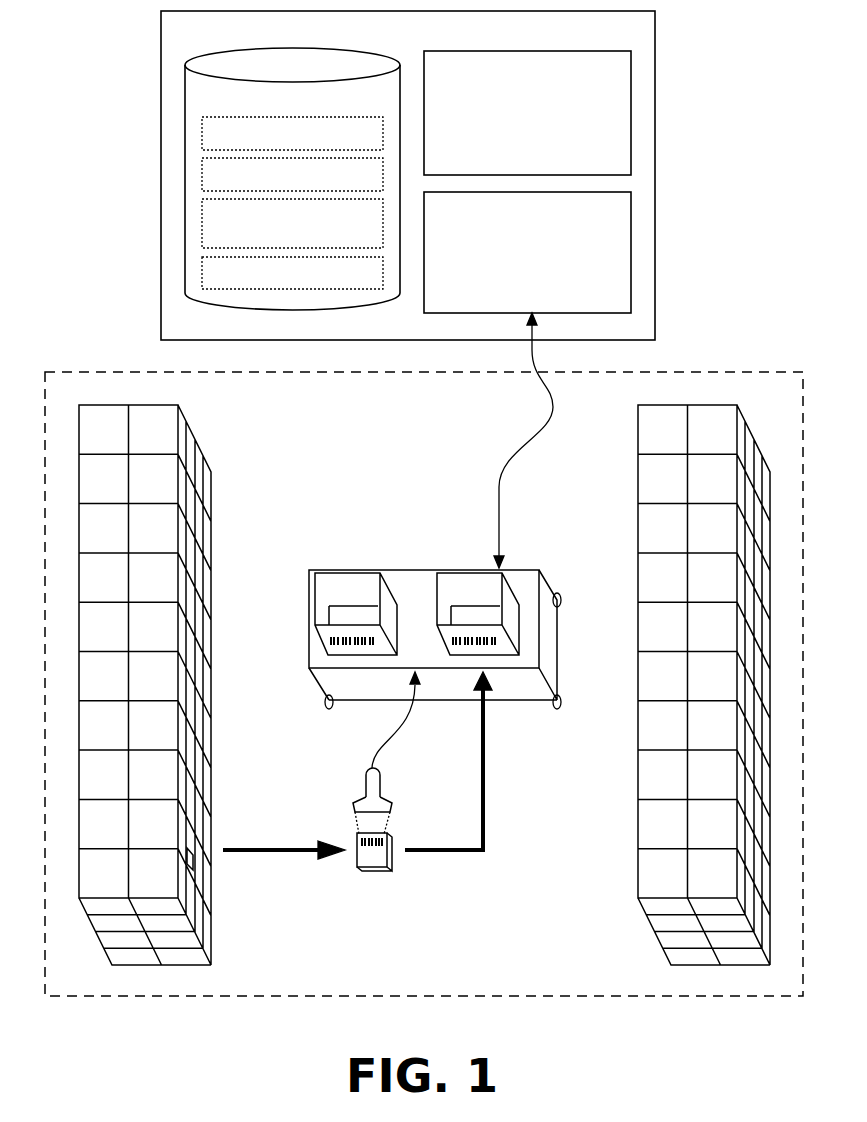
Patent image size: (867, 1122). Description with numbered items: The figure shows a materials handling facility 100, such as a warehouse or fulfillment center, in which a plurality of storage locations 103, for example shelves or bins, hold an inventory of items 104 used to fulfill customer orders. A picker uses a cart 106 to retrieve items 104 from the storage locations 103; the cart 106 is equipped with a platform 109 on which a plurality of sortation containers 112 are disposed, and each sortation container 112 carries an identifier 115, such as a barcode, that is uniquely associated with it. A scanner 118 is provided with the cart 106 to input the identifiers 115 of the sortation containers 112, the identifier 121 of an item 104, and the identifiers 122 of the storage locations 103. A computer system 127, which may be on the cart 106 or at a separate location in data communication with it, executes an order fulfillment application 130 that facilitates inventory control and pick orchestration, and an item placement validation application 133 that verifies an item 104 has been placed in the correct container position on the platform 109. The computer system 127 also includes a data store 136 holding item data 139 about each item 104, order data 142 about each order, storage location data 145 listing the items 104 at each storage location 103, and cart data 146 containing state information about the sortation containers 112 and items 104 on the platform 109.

The materials handling facility 100 is at (726, 84).
The storage locations 103 is at (152, 428).
The item 104 is at (368, 863).
The cart 106 is at (435, 584).
The platform 109 is at (408, 585).
The sortation containers 112 is at (350, 585).
The identifier 115 is at (327, 640).
The scanner 118 is at (370, 797).
The identifier 121 is at (367, 836).
The identifier 122 is at (192, 862).
The computer system 127 is at (408, 175).
The order fulfillment application 130 is at (527, 113).
The item placement validation application 133 is at (527, 252).
The data store 136 is at (292, 179).
The item data 139 is at (292, 133).
The order data 142 is at (292, 174).
The storage location data 145 is at (292, 223).
The cart data 146 is at (292, 273).